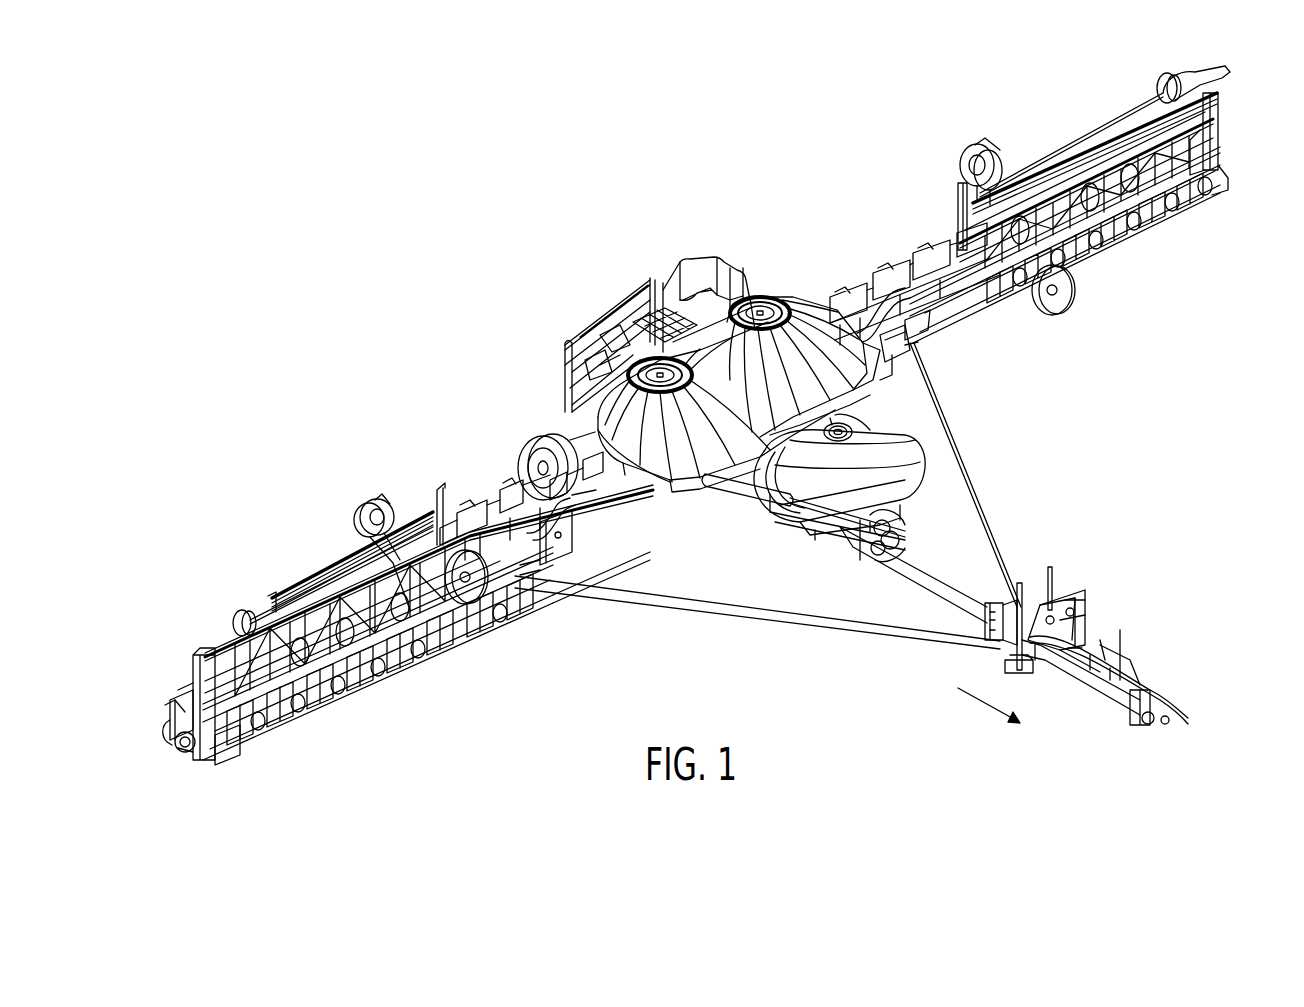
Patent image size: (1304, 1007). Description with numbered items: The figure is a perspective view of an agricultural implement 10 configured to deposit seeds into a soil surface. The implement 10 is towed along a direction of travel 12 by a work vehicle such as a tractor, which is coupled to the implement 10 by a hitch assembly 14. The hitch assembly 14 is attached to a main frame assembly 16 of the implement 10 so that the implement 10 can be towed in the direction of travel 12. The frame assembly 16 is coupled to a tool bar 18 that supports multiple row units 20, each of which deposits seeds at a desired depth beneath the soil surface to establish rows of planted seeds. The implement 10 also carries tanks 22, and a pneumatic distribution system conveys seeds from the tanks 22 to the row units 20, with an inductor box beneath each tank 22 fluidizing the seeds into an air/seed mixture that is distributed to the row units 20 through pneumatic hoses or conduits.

The agricultural implement 10 is at (482, 373).
The direction of travel 12 is at (990, 703).
The hitch assembly 14 is at (1142, 700).
The main frame assembly 16 is at (935, 575).
The tool bar 18 is at (292, 700).
The row units 20 is at (512, 493).
The tanks 22 is at (835, 368).